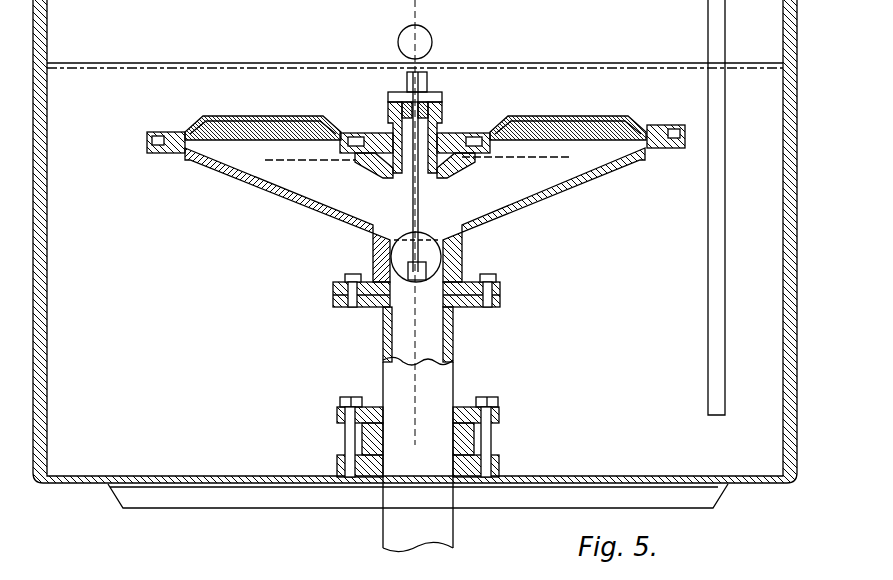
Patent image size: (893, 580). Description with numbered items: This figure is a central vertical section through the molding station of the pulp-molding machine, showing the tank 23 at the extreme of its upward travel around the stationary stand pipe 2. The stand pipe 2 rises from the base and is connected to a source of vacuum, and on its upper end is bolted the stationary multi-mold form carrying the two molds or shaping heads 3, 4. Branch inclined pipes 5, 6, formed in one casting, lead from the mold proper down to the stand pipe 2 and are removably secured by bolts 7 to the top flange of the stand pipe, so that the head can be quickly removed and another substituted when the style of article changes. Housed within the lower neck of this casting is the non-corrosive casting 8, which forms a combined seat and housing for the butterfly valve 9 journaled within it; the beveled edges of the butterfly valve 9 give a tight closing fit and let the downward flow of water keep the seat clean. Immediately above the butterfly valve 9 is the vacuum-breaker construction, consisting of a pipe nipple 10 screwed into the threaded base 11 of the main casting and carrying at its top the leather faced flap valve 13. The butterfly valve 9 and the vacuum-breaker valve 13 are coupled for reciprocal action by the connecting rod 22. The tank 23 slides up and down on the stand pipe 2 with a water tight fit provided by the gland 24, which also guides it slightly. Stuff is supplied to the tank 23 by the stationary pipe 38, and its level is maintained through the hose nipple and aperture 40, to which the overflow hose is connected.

The stand pipe 2 is at (440, 380).
The mold 3 is at (575, 140).
The mold 4 is at (255, 135).
The branch inclined pipe 5 is at (515, 170).
The branch inclined pipe 6 is at (312, 185).
The bolts 7 is at (355, 275).
The casting 8 is at (468, 265).
The butterfly valve 9 is at (418, 282).
The pipe nipple 10 is at (432, 170).
The threaded base 11 is at (470, 165).
The vacuum-breaker valve 13 is at (398, 94).
The connecting rod 22 is at (412, 190).
The tank 23 is at (415, 254).
The gland 24 is at (362, 450).
The stationary pipe 38 is at (717, 278).
The hose nipple and aperture 40 is at (432, 40).